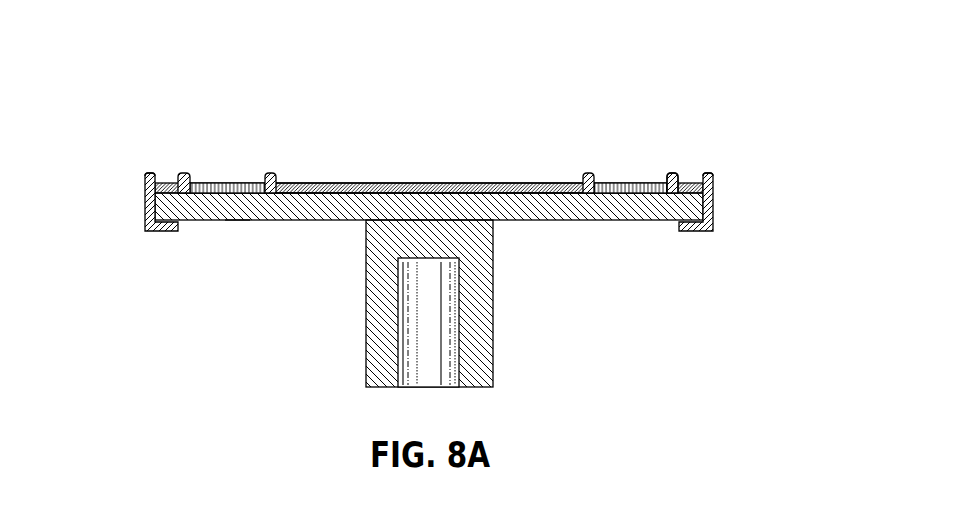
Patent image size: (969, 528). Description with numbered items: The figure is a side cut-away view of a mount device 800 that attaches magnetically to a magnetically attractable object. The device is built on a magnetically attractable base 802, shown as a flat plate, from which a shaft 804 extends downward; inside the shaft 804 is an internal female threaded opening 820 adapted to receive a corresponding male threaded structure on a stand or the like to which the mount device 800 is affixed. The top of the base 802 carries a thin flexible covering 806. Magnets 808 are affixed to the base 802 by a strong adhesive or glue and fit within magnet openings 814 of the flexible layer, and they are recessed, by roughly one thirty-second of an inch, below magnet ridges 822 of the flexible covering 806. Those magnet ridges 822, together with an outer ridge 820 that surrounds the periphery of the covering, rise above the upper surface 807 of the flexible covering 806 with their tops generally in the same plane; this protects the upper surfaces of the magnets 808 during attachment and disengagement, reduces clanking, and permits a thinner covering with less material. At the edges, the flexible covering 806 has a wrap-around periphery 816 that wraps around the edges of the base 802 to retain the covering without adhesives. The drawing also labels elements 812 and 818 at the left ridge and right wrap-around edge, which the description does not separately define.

The mount device 800 is at (451, 235).
The magnetically attractable base 802 is at (651, 202).
The shaft 804 is at (493, 326).
The flexible covering 806 is at (370, 182).
The upper surface 807 is at (322, 182).
The magnets 808 is at (223, 182).
The left protrusion 812 is at (172, 183).
The magnet openings 814 is at (668, 173).
The wrap-around periphery 816 is at (146, 200).
The right flange 818 is at (713, 207).
The threaded opening 820 is at (151, 172).
The magnet ridges 822 is at (270, 172).